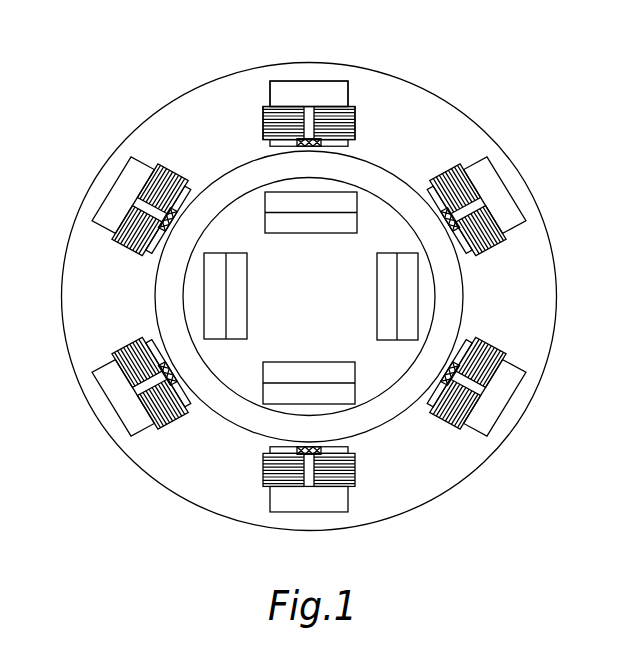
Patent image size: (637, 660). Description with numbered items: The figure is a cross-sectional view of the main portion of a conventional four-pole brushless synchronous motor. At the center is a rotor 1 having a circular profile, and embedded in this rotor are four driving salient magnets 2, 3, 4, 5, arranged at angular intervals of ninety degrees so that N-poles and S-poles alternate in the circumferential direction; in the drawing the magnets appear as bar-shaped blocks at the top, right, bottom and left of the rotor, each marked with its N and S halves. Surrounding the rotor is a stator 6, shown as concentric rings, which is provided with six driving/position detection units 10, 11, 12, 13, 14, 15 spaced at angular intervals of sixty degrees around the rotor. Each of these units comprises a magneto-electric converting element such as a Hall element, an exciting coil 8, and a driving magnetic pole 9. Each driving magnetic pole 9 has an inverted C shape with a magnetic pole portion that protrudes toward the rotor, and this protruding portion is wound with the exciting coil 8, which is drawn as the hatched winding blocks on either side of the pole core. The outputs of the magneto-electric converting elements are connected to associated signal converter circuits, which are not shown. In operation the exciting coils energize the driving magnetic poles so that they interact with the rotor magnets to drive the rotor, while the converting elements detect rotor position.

The rotor 1 is at (248, 382).
The driving salient magnet 2 is at (267, 193).
The driving salient magnet 3 is at (417, 282).
The driving salient magnet 4 is at (353, 393).
The driving salient magnet 5 is at (205, 301).
The stator 6 is at (135, 467).
The exciting coil 8 is at (267, 108).
The driving magnetic pole 9 is at (288, 85).
The driving/position detection unit 10 is at (347, 90).
The driving/position detection unit 11 is at (488, 176).
The driving/position detection unit 12 is at (487, 410).
The driving/position detection unit 13 is at (343, 502).
The driving/position detection unit 14 is at (110, 380).
The driving/position detection unit 15 is at (128, 180).